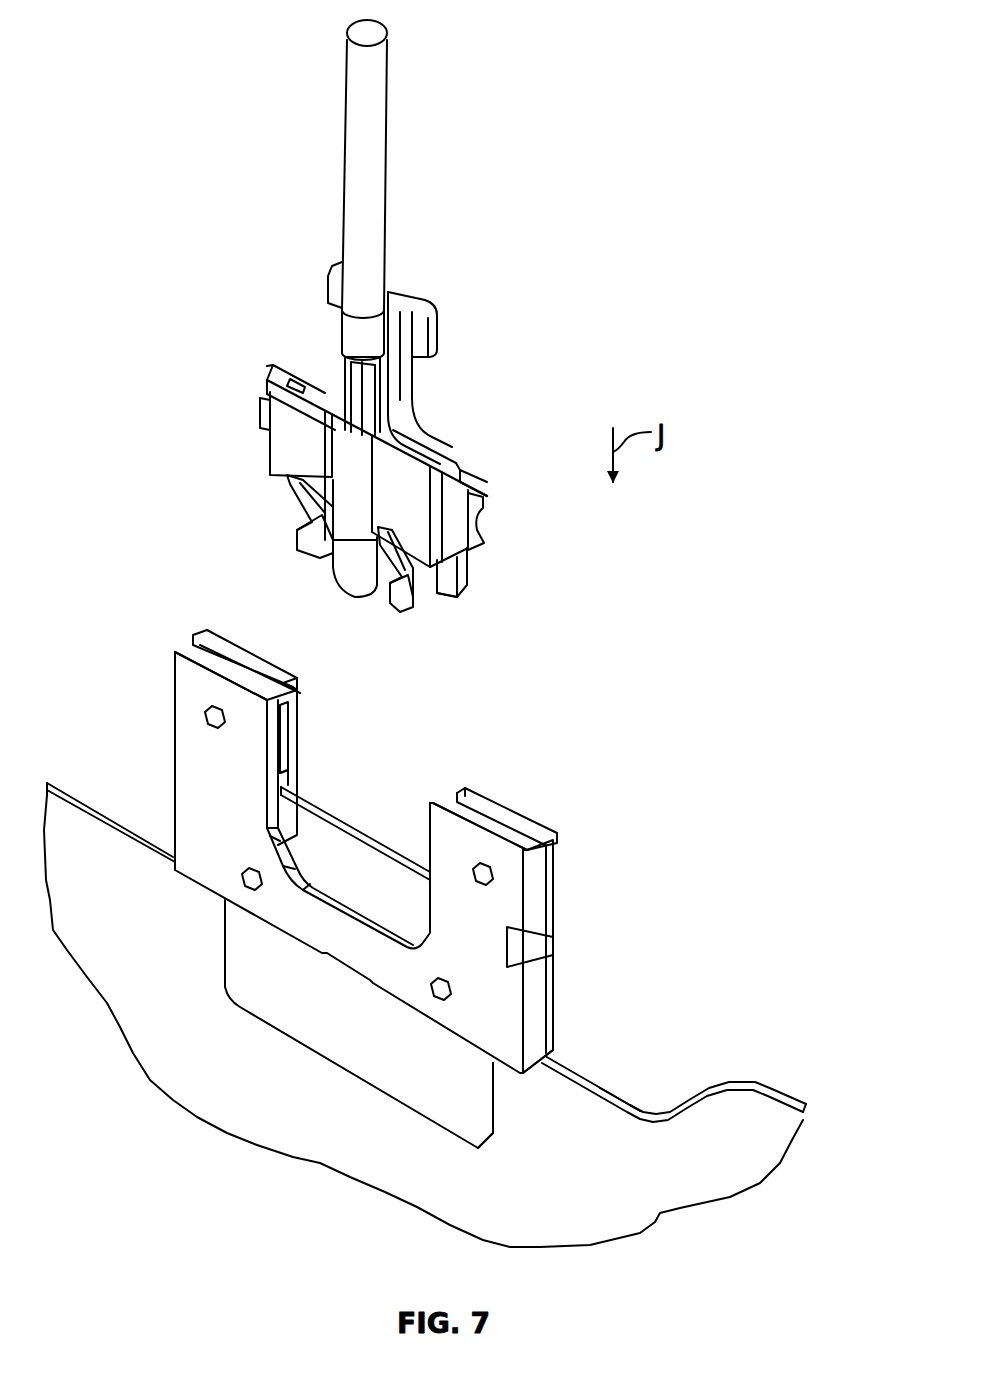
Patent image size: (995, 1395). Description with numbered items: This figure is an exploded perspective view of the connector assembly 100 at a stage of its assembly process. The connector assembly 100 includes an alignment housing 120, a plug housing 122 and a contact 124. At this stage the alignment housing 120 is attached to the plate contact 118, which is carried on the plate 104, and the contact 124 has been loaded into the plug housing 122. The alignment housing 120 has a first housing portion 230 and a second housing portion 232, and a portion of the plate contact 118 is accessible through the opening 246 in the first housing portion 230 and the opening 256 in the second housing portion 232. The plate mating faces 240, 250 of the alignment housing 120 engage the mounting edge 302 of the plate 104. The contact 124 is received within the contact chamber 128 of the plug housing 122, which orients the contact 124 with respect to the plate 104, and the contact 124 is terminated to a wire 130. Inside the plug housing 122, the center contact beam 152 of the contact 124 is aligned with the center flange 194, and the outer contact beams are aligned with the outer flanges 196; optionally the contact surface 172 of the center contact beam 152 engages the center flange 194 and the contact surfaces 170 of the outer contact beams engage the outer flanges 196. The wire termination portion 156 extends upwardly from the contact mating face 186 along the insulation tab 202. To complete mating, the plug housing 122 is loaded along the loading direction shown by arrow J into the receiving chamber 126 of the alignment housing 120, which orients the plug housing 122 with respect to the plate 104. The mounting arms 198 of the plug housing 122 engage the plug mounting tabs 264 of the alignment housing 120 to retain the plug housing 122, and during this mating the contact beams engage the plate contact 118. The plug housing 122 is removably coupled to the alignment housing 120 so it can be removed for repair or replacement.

The connector assembly 100 is at (198, 70).
The plate 104 is at (753, 1108).
The plate contact 118 is at (350, 847).
The alignment housing 120 is at (507, 820).
The plug housing 122 is at (450, 453).
The contact 124 is at (373, 397).
The receiving chamber 126 is at (432, 760).
The contact chamber 128 is at (420, 443).
The wire 130 is at (373, 175).
The center contact beam 152 is at (383, 562).
The wire termination portion 156 is at (356, 385).
The contact surfaces 170 is at (462, 594).
The contact surface 172 is at (370, 577).
The contact mating face 186 is at (318, 370).
The center flange 194 is at (362, 587).
The outer flanges 196 is at (455, 570).
The mounting arms 198 is at (470, 496).
The insulation tab 202 is at (428, 320).
The first housing portion 230 is at (220, 645).
The second housing portion 232 is at (190, 650).
The plate mating face 240 is at (558, 1060).
The opening 246 is at (298, 772).
The plate mating face 250 is at (513, 1073).
The opening 256 is at (262, 830).
The plug mounting tabs 264 is at (280, 707).
The mounting edge 302 is at (637, 1112).